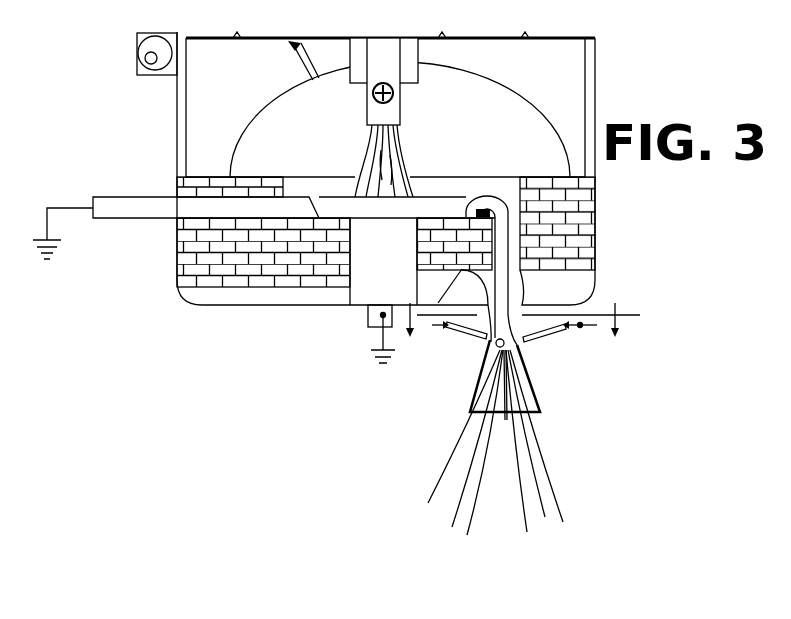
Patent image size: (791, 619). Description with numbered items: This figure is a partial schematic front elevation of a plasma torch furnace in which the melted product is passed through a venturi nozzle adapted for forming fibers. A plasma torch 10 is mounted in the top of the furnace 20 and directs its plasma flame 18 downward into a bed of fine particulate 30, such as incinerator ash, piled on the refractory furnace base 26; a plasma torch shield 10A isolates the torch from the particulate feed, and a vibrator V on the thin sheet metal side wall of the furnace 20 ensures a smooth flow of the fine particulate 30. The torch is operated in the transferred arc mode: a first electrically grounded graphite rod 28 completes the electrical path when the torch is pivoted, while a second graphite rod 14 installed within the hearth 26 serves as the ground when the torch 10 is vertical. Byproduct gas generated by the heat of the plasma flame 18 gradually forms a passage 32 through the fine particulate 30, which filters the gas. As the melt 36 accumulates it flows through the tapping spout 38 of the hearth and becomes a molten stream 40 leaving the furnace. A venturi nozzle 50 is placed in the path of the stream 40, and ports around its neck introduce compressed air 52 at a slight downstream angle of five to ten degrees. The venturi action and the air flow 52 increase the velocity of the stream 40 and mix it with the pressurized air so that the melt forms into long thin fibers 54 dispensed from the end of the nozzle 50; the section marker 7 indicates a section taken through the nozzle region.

The plasma torch 10 is at (364, 47).
The plasma torch shield 10A is at (424, 55).
The second graphite rod 14 is at (363, 292).
The plasma flame 18 is at (393, 153).
The furnace 20 is at (177, 115).
The furnace base 26 is at (186, 248).
The first graphite rod 28 is at (128, 196).
The fine particulate 30 is at (235, 107).
The passage 32 is at (307, 40).
The melt 36 is at (430, 204).
The tapping spout 38 is at (478, 199).
The molten stream 40 is at (490, 338).
The venturi nozzle 50 is at (540, 404).
The compressed air 52 is at (580, 327).
The long thin fibers 54 is at (455, 462).
The section line 7- 7 is at (523, 324).
The vibrator V is at (136, 62).